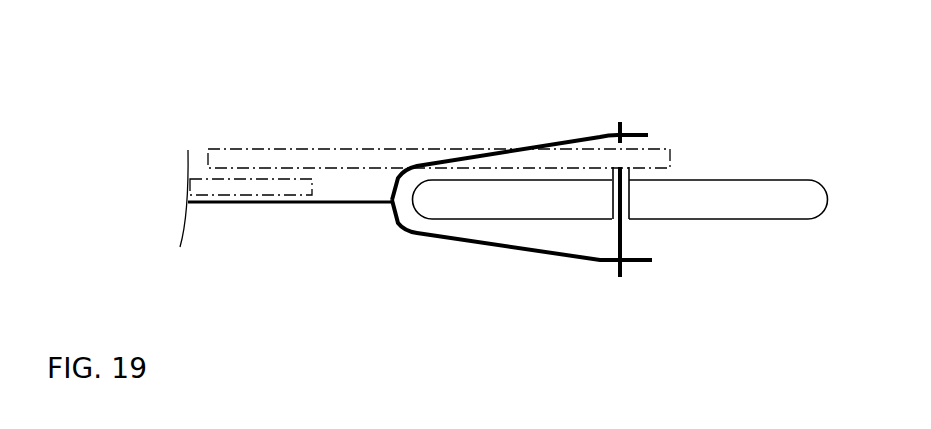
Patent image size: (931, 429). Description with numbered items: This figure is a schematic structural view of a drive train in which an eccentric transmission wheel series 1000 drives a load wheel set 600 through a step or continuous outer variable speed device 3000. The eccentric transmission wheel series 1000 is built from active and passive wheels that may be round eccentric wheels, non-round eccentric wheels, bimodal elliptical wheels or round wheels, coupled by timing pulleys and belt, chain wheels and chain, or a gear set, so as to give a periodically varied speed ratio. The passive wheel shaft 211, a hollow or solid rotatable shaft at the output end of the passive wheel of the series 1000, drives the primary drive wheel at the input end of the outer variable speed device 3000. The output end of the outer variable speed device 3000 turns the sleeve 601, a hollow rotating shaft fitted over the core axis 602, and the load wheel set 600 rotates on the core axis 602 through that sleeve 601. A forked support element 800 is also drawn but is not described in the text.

The passive wheel shaft 211 is at (265, 176).
The outer variable speed device 3000 is at (337, 145).
The eccentric transmission wheel series 1000 is at (312, 184).
The forked holder arms 800 is at (480, 248).
The sleeve 601 is at (629, 198).
The core axis 602 is at (623, 235).
The load wheel set 600 is at (785, 197).